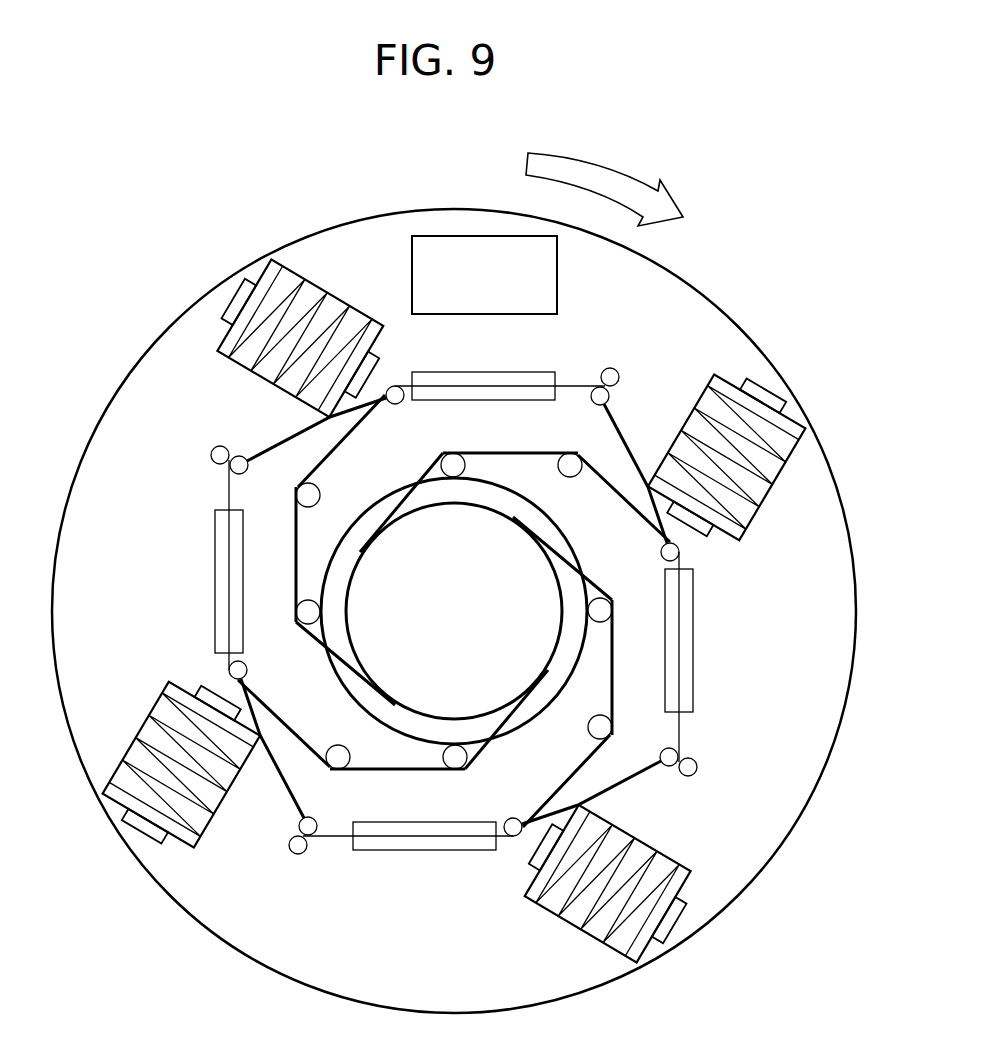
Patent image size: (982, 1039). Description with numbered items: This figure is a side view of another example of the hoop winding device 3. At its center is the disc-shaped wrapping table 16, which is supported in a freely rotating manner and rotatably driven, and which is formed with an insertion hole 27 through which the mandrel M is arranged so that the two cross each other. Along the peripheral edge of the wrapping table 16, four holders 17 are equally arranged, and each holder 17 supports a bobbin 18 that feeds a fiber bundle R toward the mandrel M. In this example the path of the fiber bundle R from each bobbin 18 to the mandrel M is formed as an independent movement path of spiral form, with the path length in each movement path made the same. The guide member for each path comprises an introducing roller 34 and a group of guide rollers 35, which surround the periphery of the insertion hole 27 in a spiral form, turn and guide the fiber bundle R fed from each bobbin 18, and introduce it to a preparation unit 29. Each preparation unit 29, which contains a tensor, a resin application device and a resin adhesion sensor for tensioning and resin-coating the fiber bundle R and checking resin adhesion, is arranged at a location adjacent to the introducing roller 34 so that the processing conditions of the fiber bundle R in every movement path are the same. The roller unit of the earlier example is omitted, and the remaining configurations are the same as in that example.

The hoop winding device 3 is at (727, 242).
The wrapping table 16 is at (688, 277).
The holder 17 is at (228, 305).
The bobbin 18 is at (312, 287).
The insertion hole 27 is at (533, 517).
The preparation unit 29 is at (452, 372).
The introducing roller 34 is at (595, 390).
The guide roller 35 is at (560, 466).
The mandrel M is at (362, 558).
The fiber bundle R is at (632, 440).